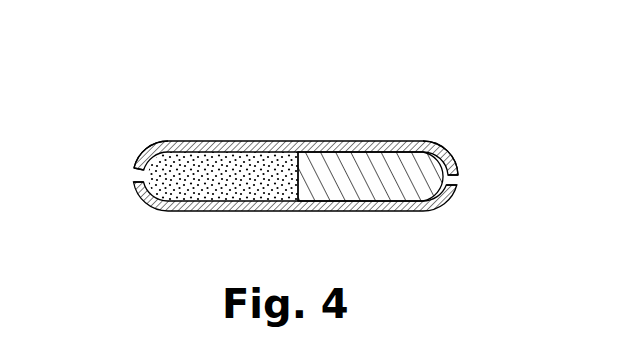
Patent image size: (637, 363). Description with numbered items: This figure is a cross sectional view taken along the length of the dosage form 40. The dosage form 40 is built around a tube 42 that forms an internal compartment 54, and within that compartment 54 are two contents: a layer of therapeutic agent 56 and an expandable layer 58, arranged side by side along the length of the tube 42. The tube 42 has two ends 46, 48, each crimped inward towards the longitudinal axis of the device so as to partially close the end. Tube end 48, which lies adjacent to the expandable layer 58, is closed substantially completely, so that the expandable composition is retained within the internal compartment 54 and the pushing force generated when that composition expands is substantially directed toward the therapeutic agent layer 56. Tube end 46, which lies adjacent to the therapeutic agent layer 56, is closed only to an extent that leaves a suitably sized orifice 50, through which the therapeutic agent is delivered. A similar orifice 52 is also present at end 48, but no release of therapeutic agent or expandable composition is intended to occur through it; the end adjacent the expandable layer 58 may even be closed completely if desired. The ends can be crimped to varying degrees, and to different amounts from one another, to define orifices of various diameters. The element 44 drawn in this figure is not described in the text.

The dosage form 40 is at (296, 152).
The tube 42 is at (296, 157).
The top wall of shell 44 is at (266, 141).
The tube end 46 is at (137, 152).
The tube end 48 is at (452, 153).
The orifice 50 is at (133, 173).
The orifice 52 is at (457, 178).
The internal compartment 54 is at (219, 173).
The layer of therapeutic agent 56 is at (224, 193).
The expandable layer 58 is at (381, 188).